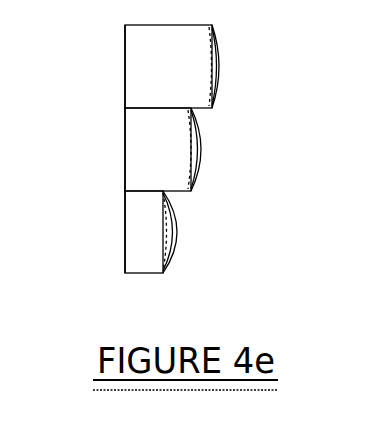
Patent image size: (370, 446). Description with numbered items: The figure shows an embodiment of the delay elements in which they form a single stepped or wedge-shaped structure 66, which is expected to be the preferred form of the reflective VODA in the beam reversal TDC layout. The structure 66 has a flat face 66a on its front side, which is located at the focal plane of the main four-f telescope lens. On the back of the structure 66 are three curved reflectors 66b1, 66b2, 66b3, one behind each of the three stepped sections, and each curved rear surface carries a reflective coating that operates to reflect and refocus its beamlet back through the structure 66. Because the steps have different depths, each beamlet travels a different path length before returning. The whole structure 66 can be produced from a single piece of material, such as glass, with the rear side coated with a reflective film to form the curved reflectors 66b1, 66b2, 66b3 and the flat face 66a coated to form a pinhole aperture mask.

The structure 66 is at (179, 168).
The flat face 66a is at (125, 122).
The curved reflector 66b1 is at (219, 67).
The curved reflector 66b2 is at (202, 152).
The curved reflector 66b3 is at (177, 233).